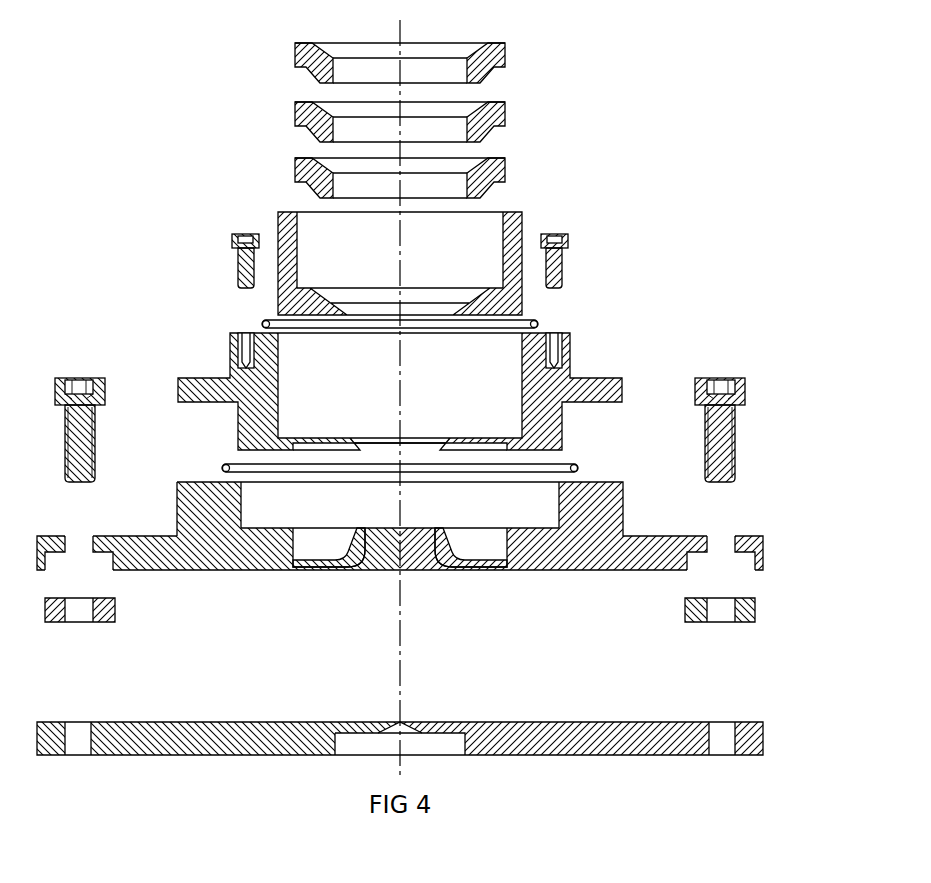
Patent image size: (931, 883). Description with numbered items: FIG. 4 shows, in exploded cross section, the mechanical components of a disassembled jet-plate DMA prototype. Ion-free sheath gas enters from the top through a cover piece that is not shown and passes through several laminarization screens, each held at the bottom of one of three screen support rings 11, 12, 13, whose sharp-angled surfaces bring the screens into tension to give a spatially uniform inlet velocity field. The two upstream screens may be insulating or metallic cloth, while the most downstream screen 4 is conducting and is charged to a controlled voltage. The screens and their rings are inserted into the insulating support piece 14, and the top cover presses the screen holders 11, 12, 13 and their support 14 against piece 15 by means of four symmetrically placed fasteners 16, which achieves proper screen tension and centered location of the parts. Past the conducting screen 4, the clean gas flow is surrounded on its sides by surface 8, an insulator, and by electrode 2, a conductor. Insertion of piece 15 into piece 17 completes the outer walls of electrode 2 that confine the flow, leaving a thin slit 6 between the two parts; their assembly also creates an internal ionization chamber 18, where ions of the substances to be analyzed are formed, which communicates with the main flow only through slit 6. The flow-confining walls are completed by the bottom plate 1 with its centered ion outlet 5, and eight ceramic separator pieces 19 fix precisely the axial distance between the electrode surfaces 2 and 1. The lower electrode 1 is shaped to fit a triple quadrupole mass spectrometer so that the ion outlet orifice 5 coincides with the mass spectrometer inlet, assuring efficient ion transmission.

The bottom plate 1 is at (222, 722).
The electrode 2 is at (435, 528).
The conducting screen 4 is at (420, 303).
The ion outlet 5 is at (398, 722).
The slit 6 is at (443, 527).
The insulating surface 8 is at (460, 307).
The screen support ring 11 is at (296, 66).
The screen support ring 12 is at (296, 127).
The screen support ring 13 is at (296, 175).
The support piece 14 is at (278, 233).
The piece 15 is at (215, 377).
The fastener 16 is at (236, 255).
The piece 17 is at (168, 535).
The ionization chamber 18 is at (485, 549).
The ceramic separator piece 19 is at (693, 622).